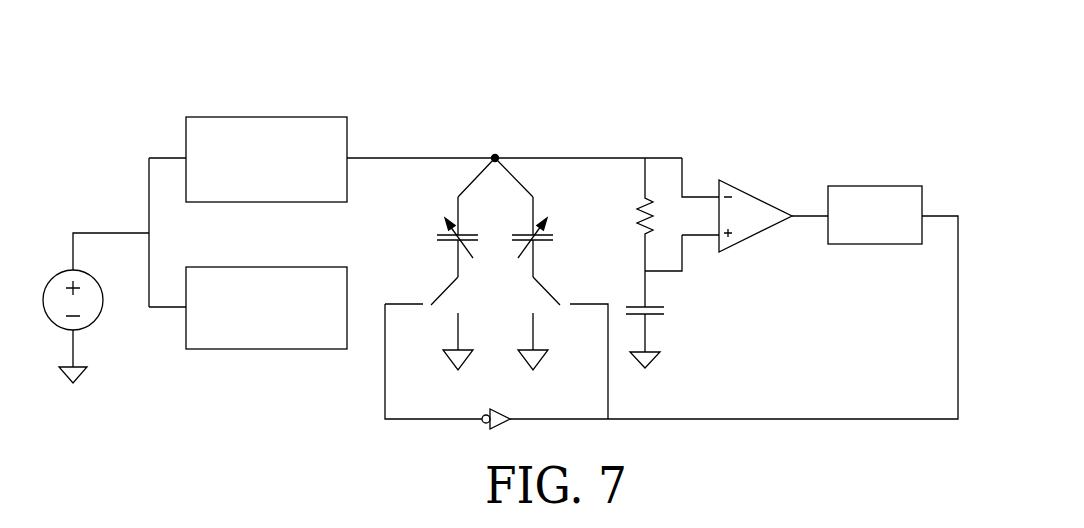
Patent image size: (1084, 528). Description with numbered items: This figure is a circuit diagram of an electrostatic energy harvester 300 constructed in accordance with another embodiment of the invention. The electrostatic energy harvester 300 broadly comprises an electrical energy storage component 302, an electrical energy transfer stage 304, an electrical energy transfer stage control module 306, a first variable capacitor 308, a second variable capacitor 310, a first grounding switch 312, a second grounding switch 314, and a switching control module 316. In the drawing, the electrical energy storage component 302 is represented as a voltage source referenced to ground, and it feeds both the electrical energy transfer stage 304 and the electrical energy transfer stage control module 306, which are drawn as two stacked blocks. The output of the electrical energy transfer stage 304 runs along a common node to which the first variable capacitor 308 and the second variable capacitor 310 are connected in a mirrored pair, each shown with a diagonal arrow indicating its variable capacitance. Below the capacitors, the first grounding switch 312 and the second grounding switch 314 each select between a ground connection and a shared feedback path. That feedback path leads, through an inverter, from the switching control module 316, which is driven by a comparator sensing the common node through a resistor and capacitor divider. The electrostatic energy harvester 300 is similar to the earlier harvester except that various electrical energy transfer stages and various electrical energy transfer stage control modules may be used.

The electrostatic energy harvester 300 is at (642, 70).
The electrical energy storage component 302 is at (106, 323).
The electrical energy transfer stage 304 is at (307, 117).
The electrical energy transfer stage control module 306 is at (307, 267).
The first variable capacitor 308 is at (562, 238).
The second variable capacitor 310 is at (428, 238).
The first grounding switch 312 is at (543, 311).
The second grounding switch 314 is at (447, 311).
The switching control module 316 is at (810, 152).